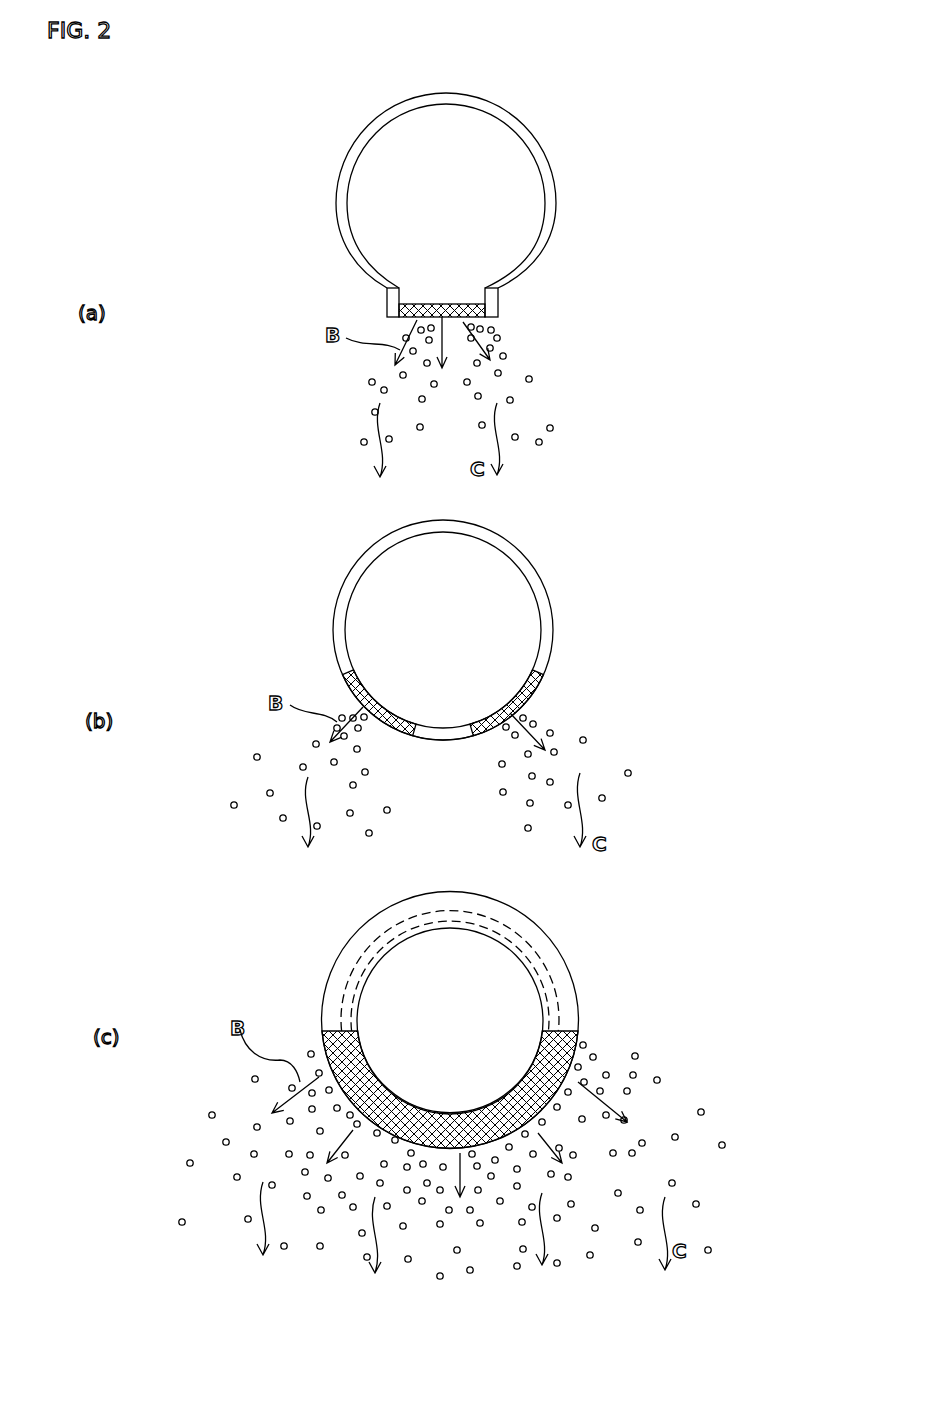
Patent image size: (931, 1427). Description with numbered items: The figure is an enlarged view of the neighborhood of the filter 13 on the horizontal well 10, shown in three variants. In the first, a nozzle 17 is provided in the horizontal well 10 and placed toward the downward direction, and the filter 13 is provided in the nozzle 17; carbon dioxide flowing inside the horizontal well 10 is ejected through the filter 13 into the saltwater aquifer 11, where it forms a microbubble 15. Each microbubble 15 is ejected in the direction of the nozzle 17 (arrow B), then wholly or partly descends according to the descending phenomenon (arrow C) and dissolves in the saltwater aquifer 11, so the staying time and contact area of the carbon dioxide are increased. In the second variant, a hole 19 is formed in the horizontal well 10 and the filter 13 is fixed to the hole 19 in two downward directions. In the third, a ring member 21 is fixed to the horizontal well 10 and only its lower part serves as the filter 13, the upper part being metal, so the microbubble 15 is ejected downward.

The horizontal well 10 is at (342, 207).
The saltwater aquifer 11 is at (280, 245).
The filter 13 is at (445, 306).
The microbubble 15 is at (553, 429).
The nozzle 17 is at (493, 308).
The hole 19 is at (523, 672).
The ring member 21 is at (557, 968).